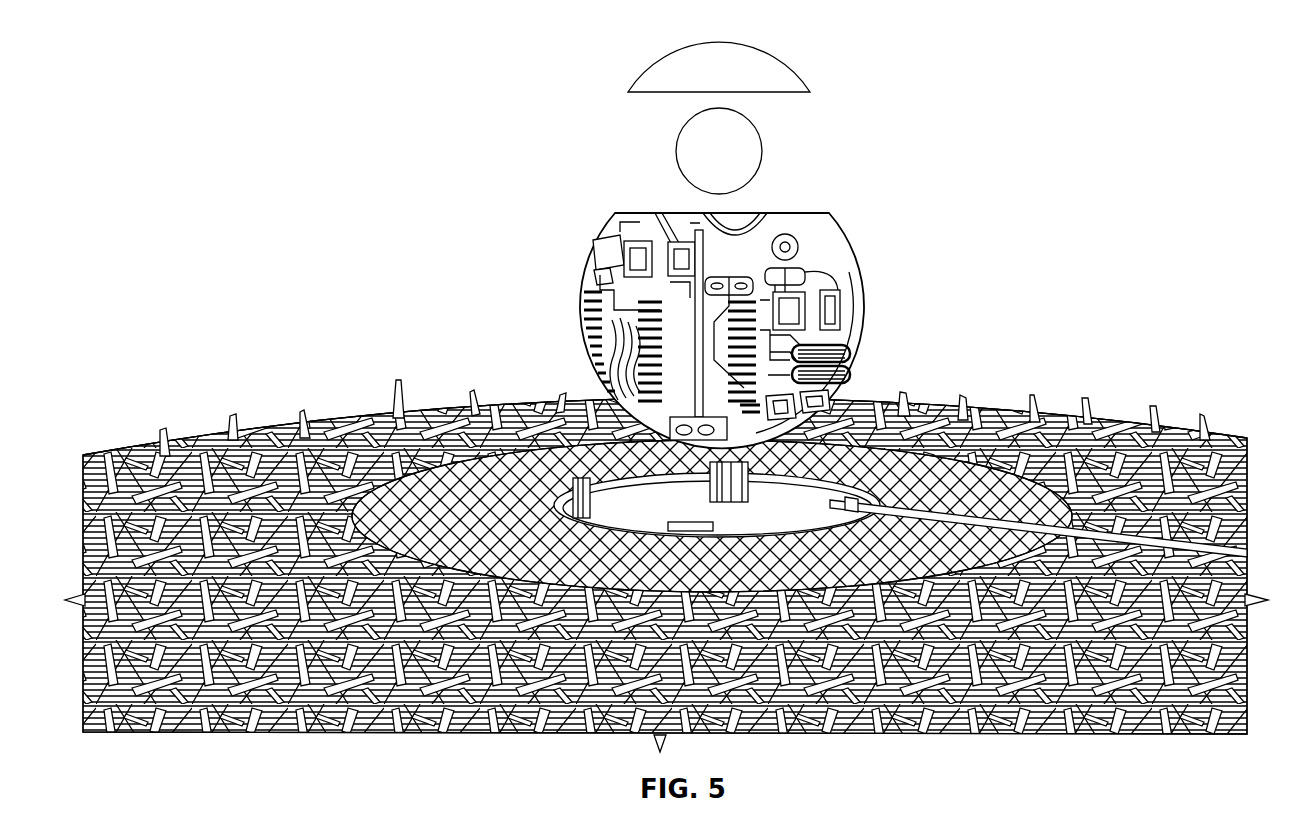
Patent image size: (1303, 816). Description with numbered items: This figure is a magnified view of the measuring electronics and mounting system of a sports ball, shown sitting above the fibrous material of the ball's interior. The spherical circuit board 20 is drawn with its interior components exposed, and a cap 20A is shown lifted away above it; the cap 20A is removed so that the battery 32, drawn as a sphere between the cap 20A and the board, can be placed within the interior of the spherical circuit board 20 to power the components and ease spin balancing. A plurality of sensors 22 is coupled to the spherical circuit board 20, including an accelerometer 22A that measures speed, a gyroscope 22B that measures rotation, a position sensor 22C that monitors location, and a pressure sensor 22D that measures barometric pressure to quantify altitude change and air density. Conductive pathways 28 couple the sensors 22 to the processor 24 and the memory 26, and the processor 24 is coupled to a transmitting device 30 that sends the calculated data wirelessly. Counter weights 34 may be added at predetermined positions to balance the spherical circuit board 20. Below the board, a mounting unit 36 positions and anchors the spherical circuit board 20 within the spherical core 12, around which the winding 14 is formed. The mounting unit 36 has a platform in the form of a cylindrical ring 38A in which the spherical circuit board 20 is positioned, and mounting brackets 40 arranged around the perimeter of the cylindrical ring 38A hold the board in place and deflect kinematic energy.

The spherical circuit board 20 is at (724, 284).
The cap 20A is at (772, 60).
The battery 32 is at (678, 142).
The conductive pathways 28 is at (733, 245).
The transmitting device 30 is at (790, 238).
The counter weights 34 is at (712, 268).
The sensors 22 is at (724, 268).
The accelerometer 22A is at (600, 272).
The gyroscope 22B is at (676, 258).
The position sensor 22C is at (797, 307).
The pressure sensor 22D is at (833, 302).
The memory 26 is at (848, 372).
The mounting unit 36 is at (480, 366).
The spherical core 12 is at (980, 407).
The winding 14 is at (1067, 412).
The cylindrical ring 38A is at (805, 498).
The mounting brackets 40 is at (590, 503).
The processor 24 is at (852, 512).